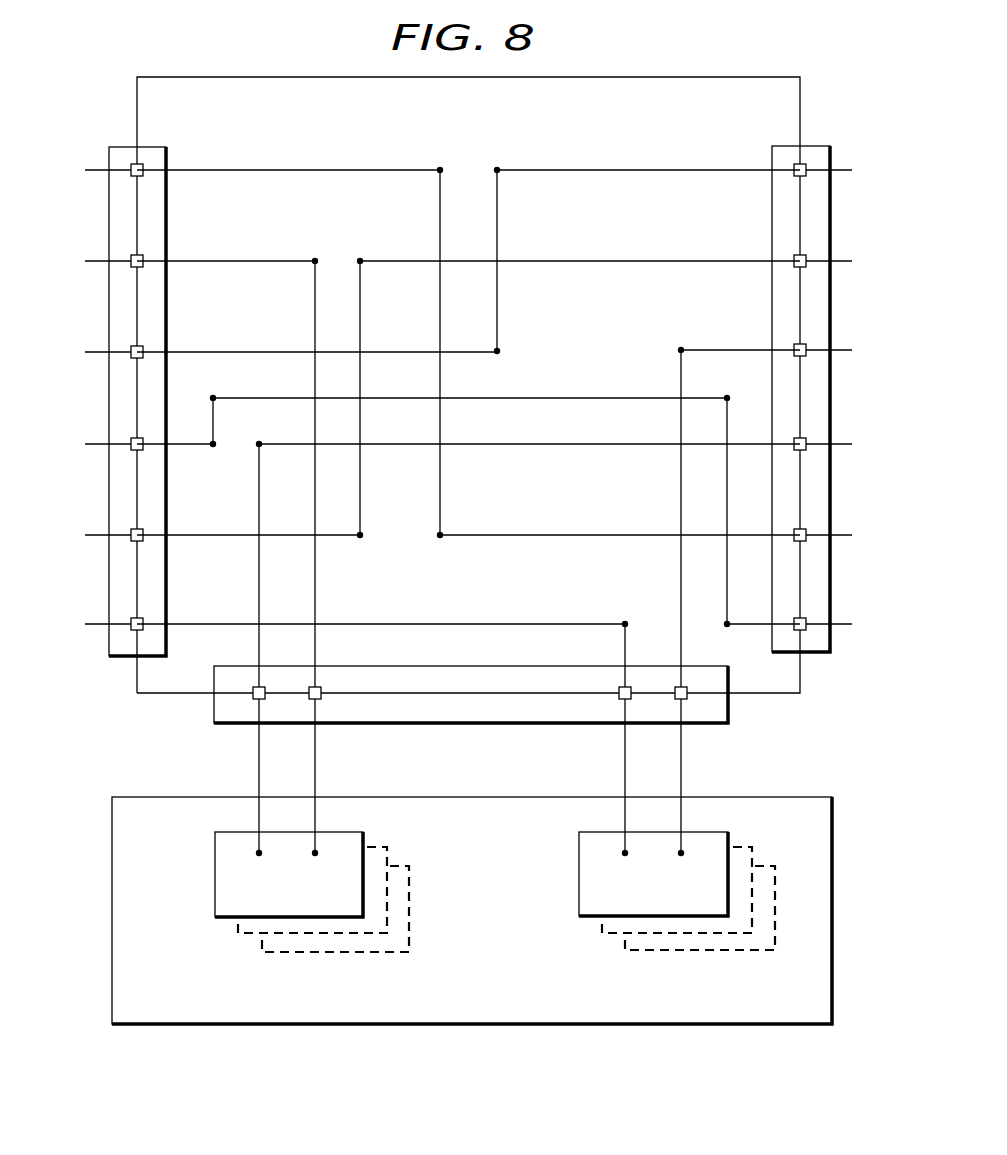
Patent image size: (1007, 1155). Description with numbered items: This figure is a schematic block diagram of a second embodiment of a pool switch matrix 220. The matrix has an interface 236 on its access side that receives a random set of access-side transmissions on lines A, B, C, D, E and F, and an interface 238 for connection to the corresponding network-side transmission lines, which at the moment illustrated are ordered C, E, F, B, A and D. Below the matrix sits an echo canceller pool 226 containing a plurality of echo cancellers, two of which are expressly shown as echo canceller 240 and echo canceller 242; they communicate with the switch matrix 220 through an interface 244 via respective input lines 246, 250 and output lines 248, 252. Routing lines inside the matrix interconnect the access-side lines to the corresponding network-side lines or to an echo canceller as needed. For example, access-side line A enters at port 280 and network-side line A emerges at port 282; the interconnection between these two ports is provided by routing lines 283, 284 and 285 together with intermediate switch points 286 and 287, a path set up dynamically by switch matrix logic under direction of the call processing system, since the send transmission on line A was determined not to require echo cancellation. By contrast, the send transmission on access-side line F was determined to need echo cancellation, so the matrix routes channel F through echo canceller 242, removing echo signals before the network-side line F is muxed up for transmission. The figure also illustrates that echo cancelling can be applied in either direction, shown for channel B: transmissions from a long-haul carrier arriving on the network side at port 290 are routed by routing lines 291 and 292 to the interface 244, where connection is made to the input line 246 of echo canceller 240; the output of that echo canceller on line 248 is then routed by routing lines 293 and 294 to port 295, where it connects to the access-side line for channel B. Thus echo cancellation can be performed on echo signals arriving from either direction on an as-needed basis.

The pool switch matrix 220 is at (802, 112).
The echo canceller pool 226 is at (112, 930).
The interface 236 is at (118, 146).
The interface 238 is at (823, 654).
The echo canceller 240 is at (215, 870).
The echo canceller 242 is at (579, 870).
The interface 244 is at (214, 710).
The input line 246 is at (258, 754).
The output line 248 is at (317, 754).
The input line 250 is at (624, 752).
The output line 252 is at (682, 752).
The port 280 is at (131, 181).
The port 282 is at (806, 540).
The routing line 283 is at (269, 168).
The routing line 284 is at (441, 472).
The routing line 285 is at (566, 540).
The switch point 286 is at (438, 172).
The switch point 287 is at (442, 540).
The port 290 is at (806, 449).
The routing line 291 is at (591, 446).
The routing line 292 is at (258, 588).
The routing line 293 is at (317, 588).
The routing line 294 is at (260, 259).
The port 295 is at (131, 271).